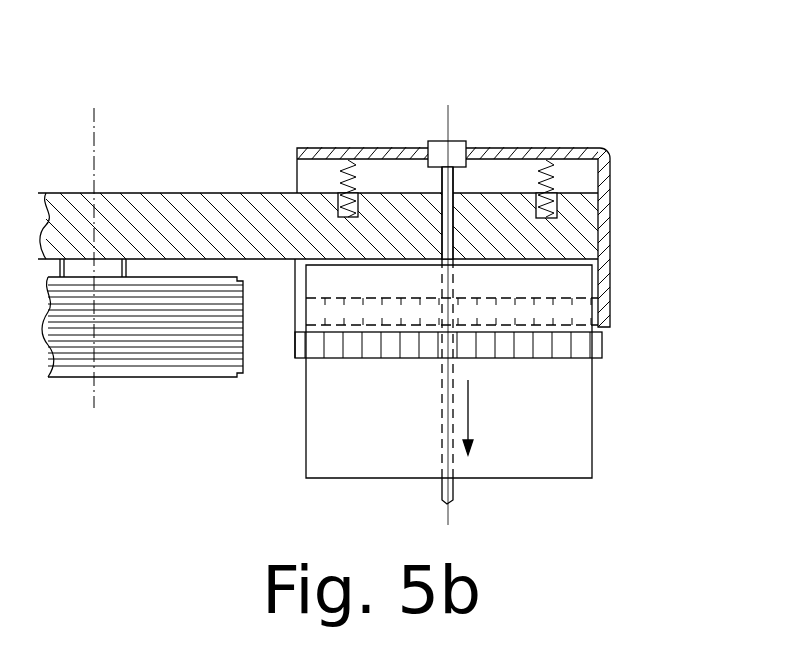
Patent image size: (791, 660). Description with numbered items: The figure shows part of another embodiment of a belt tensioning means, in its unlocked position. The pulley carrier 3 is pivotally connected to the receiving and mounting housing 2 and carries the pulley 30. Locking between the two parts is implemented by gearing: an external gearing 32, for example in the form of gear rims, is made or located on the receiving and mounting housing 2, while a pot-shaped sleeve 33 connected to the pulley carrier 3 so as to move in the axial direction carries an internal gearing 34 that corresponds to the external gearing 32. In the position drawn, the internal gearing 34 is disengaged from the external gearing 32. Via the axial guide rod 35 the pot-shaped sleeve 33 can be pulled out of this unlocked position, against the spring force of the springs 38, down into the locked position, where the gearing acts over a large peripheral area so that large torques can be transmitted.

The receiving and mounting housing 2 is at (572, 430).
The pulley carrier 3 is at (150, 195).
The pulley 30 is at (118, 363).
The external gearing 32 is at (602, 343).
The pot-shaped sleeve 33 is at (600, 150).
The internal gearing 34 is at (572, 310).
The axial guide rod 35 is at (450, 505).
The springs 38 is at (343, 165).